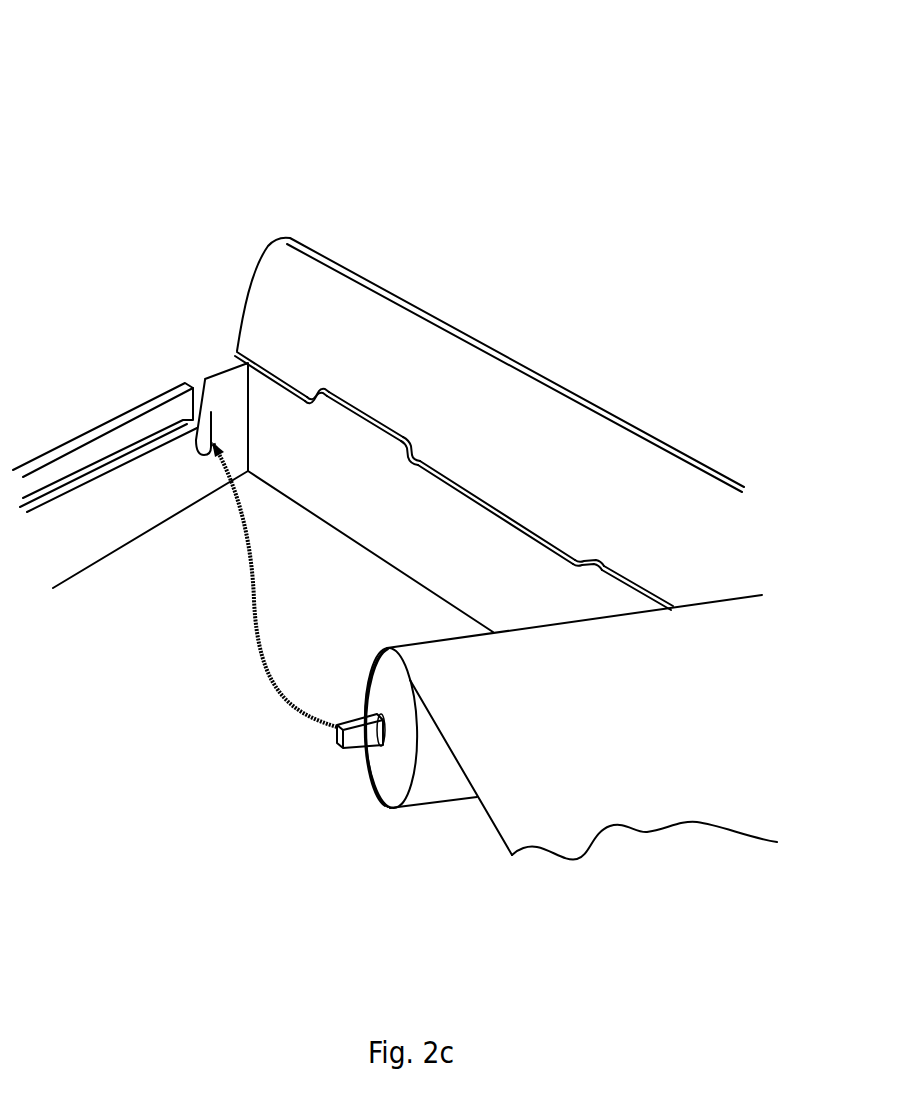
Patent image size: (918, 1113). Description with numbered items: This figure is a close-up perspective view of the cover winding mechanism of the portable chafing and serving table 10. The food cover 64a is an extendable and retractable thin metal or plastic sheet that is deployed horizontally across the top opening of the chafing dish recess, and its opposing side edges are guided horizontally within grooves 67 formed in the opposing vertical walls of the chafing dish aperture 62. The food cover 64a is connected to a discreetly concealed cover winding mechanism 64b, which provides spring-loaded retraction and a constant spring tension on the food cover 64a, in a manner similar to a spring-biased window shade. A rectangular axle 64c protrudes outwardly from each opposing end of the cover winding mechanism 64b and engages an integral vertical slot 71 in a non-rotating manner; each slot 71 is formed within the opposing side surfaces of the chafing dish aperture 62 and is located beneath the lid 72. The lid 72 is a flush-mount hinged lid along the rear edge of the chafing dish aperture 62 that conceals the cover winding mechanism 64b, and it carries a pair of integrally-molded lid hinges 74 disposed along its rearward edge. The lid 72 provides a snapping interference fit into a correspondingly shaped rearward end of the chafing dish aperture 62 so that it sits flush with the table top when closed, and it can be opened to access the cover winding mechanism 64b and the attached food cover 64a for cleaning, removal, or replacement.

The retractable screen assembly 10 is at (138, 147).
The chafing dish aperture 62 is at (307, 438).
The grooves 67 is at (120, 460).
The vertical slot 71 is at (210, 412).
The lid 72 is at (420, 358).
The lid hinges 74 is at (622, 568).
The food cover 64a is at (553, 757).
The cover winding mechanism 64b is at (360, 750).
The rectangular axle 64c is at (335, 744).